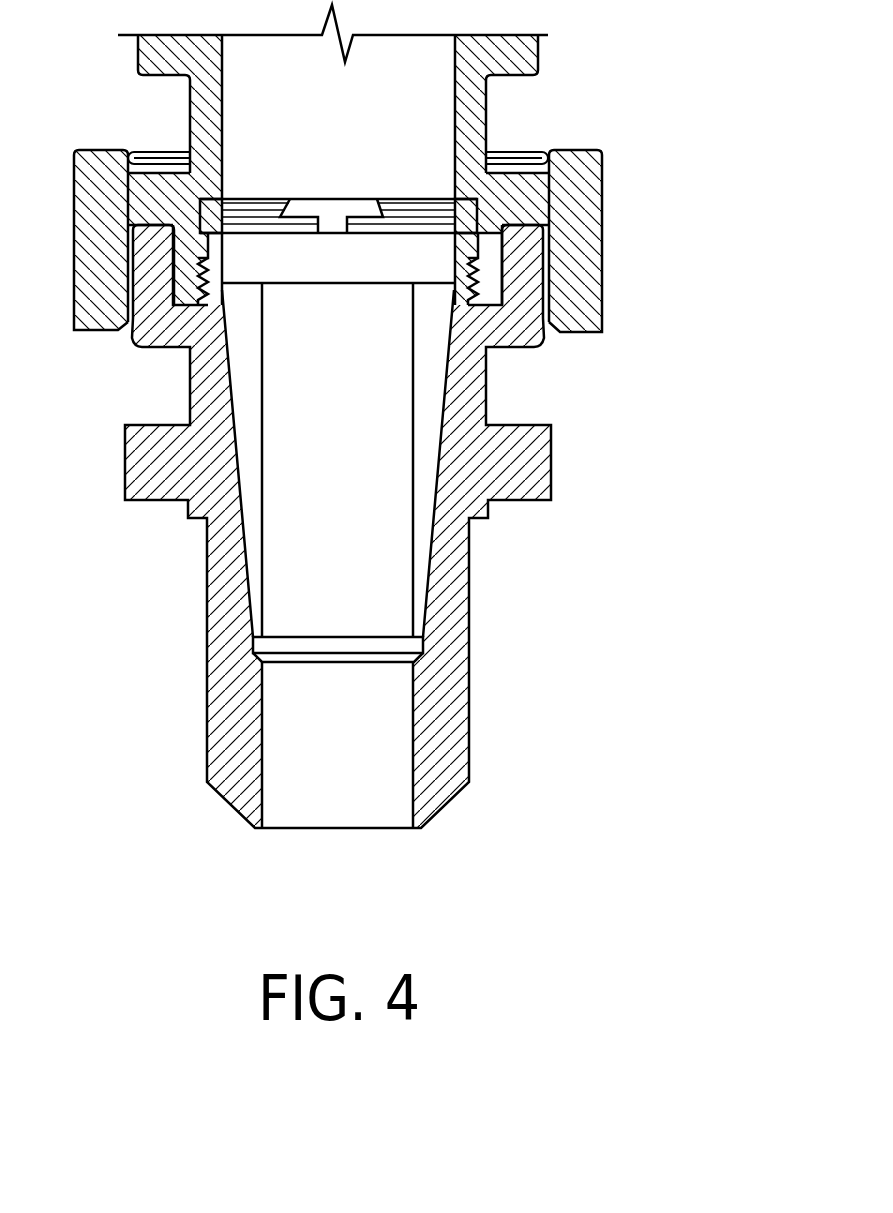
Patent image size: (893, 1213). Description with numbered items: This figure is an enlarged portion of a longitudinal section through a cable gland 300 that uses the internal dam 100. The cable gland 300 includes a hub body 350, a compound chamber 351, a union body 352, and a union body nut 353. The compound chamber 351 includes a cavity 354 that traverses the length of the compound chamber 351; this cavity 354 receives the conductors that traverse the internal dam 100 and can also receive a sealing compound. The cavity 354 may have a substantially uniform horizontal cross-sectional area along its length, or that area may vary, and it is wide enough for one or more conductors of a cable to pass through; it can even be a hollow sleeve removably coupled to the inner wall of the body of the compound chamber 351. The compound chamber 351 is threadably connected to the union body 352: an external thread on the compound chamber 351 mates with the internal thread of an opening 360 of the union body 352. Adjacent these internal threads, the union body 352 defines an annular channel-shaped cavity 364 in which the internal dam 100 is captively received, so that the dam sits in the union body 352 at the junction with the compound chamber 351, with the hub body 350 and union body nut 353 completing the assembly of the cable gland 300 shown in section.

The internal dam 100 is at (334, 178).
The cable gland 300 is at (655, 396).
The hub body 350 is at (468, 670).
The compound chamber 351 is at (428, 552).
The union body 352 is at (478, 118).
The union body nut 353 is at (593, 258).
The cavity 354 is at (387, 611).
The opening 360 is at (470, 272).
The annular channel-shaped cavity 364 is at (223, 200).